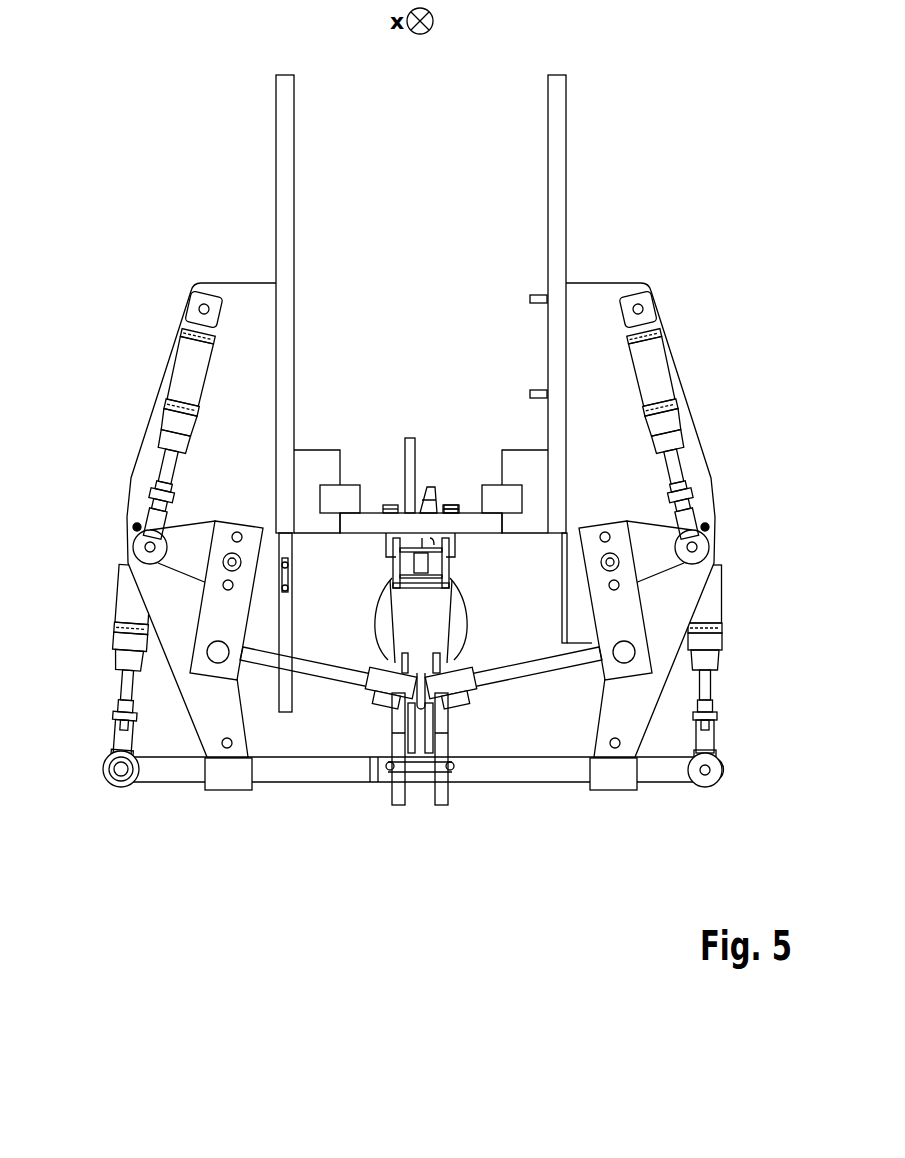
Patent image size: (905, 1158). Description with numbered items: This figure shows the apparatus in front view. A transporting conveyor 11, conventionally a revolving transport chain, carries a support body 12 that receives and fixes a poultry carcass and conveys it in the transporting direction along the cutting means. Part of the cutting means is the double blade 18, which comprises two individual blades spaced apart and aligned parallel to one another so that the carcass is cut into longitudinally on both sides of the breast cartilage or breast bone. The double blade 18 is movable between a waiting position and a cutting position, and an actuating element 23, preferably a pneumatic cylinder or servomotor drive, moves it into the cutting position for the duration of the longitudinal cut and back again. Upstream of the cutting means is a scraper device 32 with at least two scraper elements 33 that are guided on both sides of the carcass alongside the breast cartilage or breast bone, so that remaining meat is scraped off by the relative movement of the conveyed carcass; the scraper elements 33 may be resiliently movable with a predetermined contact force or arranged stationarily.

The transporting conveyor 11 is at (443, 475).
The support body 12 is at (400, 612).
The double blade 18 is at (420, 805).
The actuating element 23 is at (112, 597).
The scraper device 32 is at (333, 682).
The scraper elements 33 is at (385, 703).